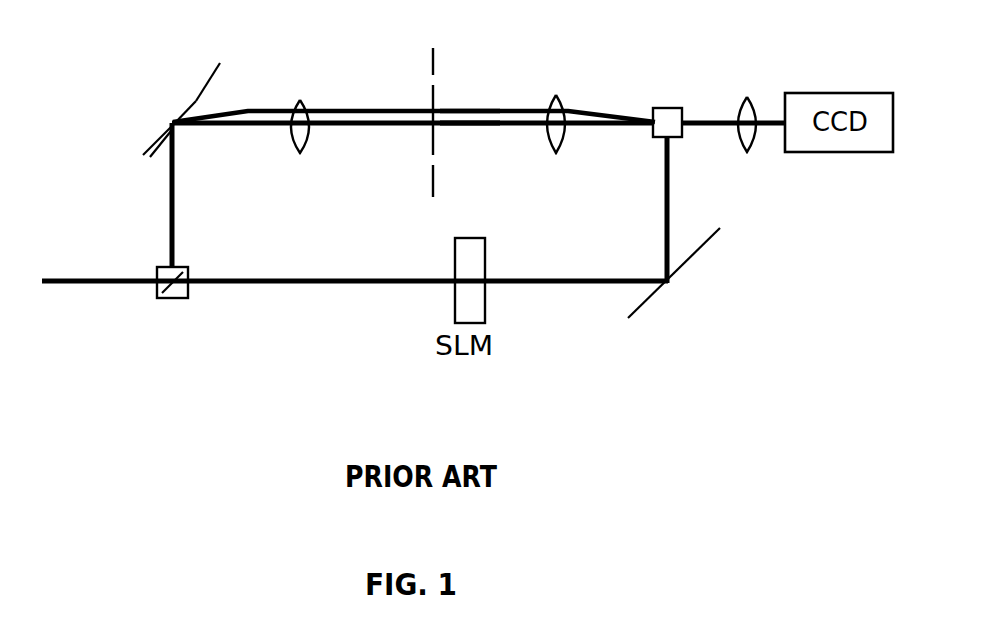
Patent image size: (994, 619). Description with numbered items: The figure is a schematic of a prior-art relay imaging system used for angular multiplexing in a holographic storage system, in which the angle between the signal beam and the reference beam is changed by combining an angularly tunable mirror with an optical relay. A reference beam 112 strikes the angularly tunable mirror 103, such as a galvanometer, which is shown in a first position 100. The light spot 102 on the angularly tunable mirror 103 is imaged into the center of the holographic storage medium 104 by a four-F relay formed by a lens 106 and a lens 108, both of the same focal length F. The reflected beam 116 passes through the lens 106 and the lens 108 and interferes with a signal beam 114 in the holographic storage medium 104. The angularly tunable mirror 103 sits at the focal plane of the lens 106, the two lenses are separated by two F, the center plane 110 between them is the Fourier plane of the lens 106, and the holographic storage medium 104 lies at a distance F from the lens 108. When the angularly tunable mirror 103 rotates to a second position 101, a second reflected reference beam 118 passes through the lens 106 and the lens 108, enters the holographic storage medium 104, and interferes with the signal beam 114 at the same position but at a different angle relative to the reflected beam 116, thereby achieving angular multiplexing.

The first position 100 is at (150, 146).
The second position 101 is at (193, 104).
The light spot 102 is at (170, 120).
The angularly tunable mirror 103 is at (194, 104).
The holographic storage medium 104 is at (675, 108).
The lens 106 is at (303, 100).
The lens 108 is at (557, 97).
The center plane 110 is at (432, 52).
The reference beam 112 is at (170, 208).
The signal beam 114 is at (668, 197).
The reflected beam 116 is at (462, 126).
The second reflected reference beam 118 is at (458, 108).